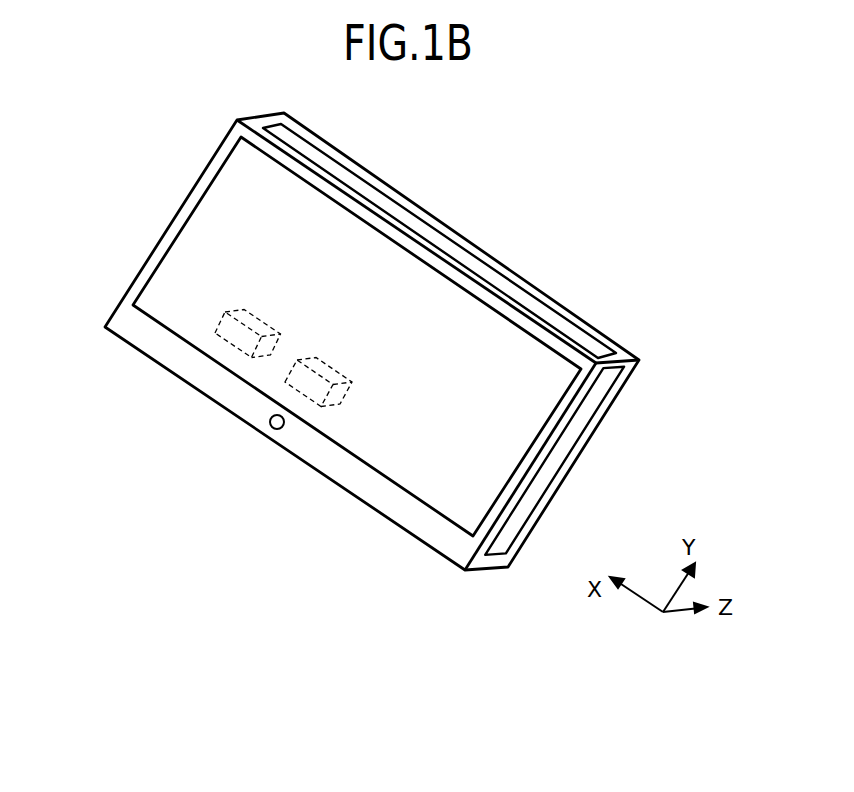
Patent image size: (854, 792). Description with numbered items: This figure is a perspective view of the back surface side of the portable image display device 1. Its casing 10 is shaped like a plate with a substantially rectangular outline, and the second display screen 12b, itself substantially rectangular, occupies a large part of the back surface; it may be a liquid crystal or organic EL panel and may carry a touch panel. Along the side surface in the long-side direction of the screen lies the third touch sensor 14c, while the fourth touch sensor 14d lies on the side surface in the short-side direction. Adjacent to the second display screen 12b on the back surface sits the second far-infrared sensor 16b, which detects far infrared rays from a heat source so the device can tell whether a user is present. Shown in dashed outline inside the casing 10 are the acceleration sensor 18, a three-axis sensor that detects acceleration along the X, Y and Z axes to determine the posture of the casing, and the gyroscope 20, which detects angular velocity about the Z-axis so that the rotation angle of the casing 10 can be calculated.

The portable image display device 1 is at (380, 379).
The casing 10 is at (203, 170).
The second display screen 12b is at (175, 232).
The third touch sensor 14c is at (587, 330).
The fourth touch sensor 14d is at (553, 480).
The second far-infrared sensor 16b is at (272, 429).
The acceleration sensor 18 is at (263, 322).
The gyroscope 20 is at (340, 370).